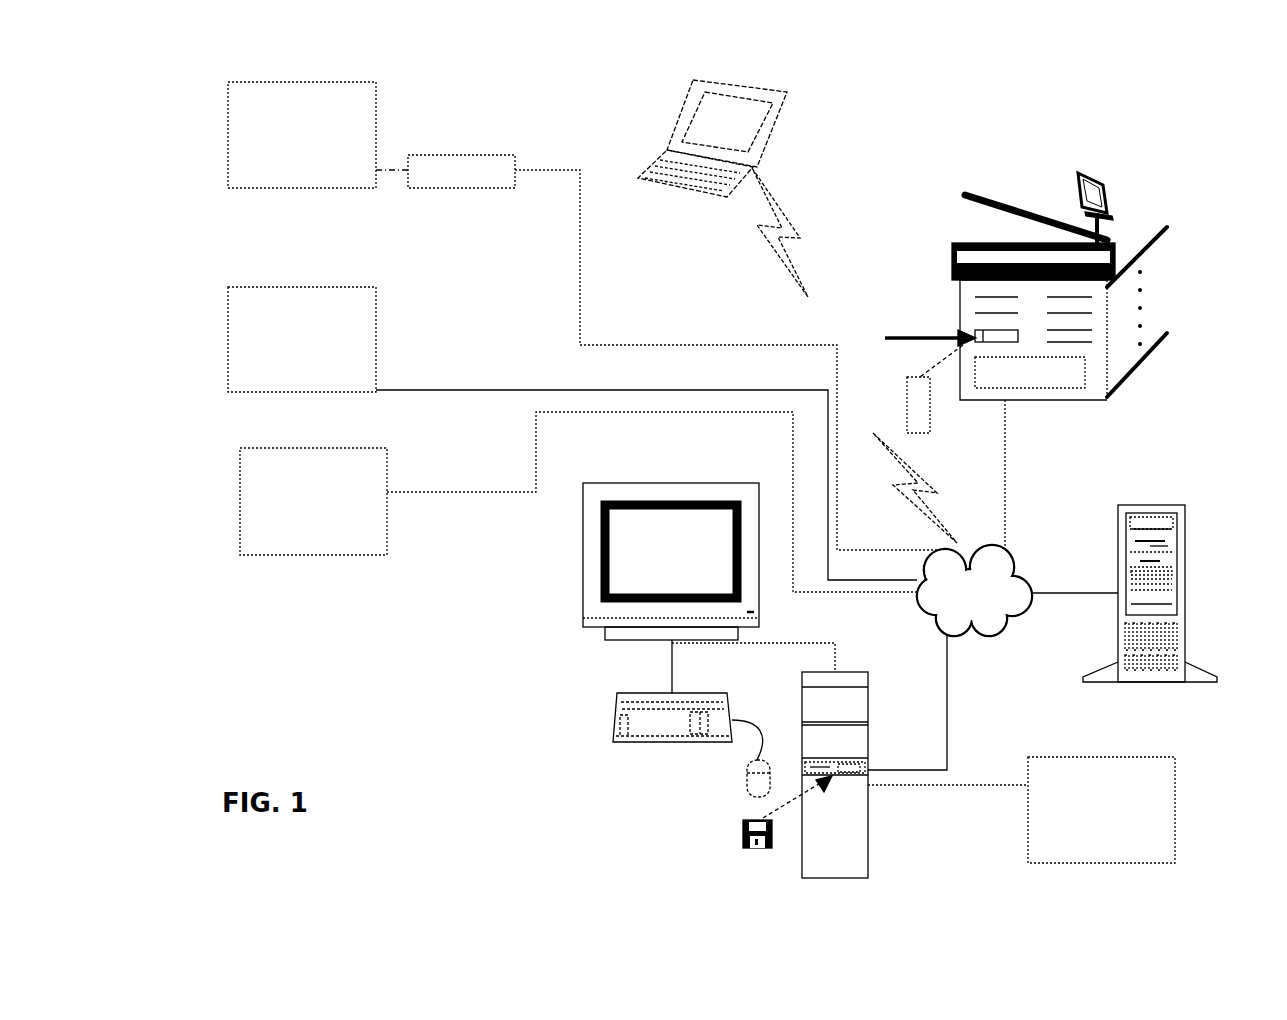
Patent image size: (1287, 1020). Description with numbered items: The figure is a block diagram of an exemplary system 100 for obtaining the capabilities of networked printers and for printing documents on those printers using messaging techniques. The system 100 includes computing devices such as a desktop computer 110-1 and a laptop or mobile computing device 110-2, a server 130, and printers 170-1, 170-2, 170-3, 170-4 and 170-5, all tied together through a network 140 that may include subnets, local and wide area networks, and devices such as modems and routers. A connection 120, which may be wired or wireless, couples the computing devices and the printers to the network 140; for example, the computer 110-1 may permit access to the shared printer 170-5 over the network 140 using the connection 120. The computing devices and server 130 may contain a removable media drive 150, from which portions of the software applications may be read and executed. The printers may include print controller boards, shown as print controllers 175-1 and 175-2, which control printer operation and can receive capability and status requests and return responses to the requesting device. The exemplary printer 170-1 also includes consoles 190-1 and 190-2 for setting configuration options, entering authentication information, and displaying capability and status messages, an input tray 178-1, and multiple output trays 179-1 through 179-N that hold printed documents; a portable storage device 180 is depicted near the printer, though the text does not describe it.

The system 100 is at (354, 583).
The computer workstation or desktop computer 110-1 is at (765, 775).
The laptop or mobile computing device 110-2 is at (723, 175).
The connection 120 is at (747, 477).
The server 130 is at (1150, 586).
The network 140 is at (952, 534).
The removable media drive 150 is at (787, 824).
The printer 170-1 is at (1046, 320).
The printer 170-2 is at (302, 135).
The printer 170-3 is at (302, 339).
The printer 170-4 is at (313, 501).
The printer 170-5 is at (1101, 810).
The print controller 175-1 is at (461, 171).
The print controller 175-2 is at (1030, 372).
The input tray 178-1 is at (912, 351).
The output tray 179-1 is at (1185, 365).
The output tray 179-N is at (1184, 249).
The portable storage device 180 is at (936, 389).
The console 190-1 is at (1114, 189).
The console 190-2 is at (580, 515).